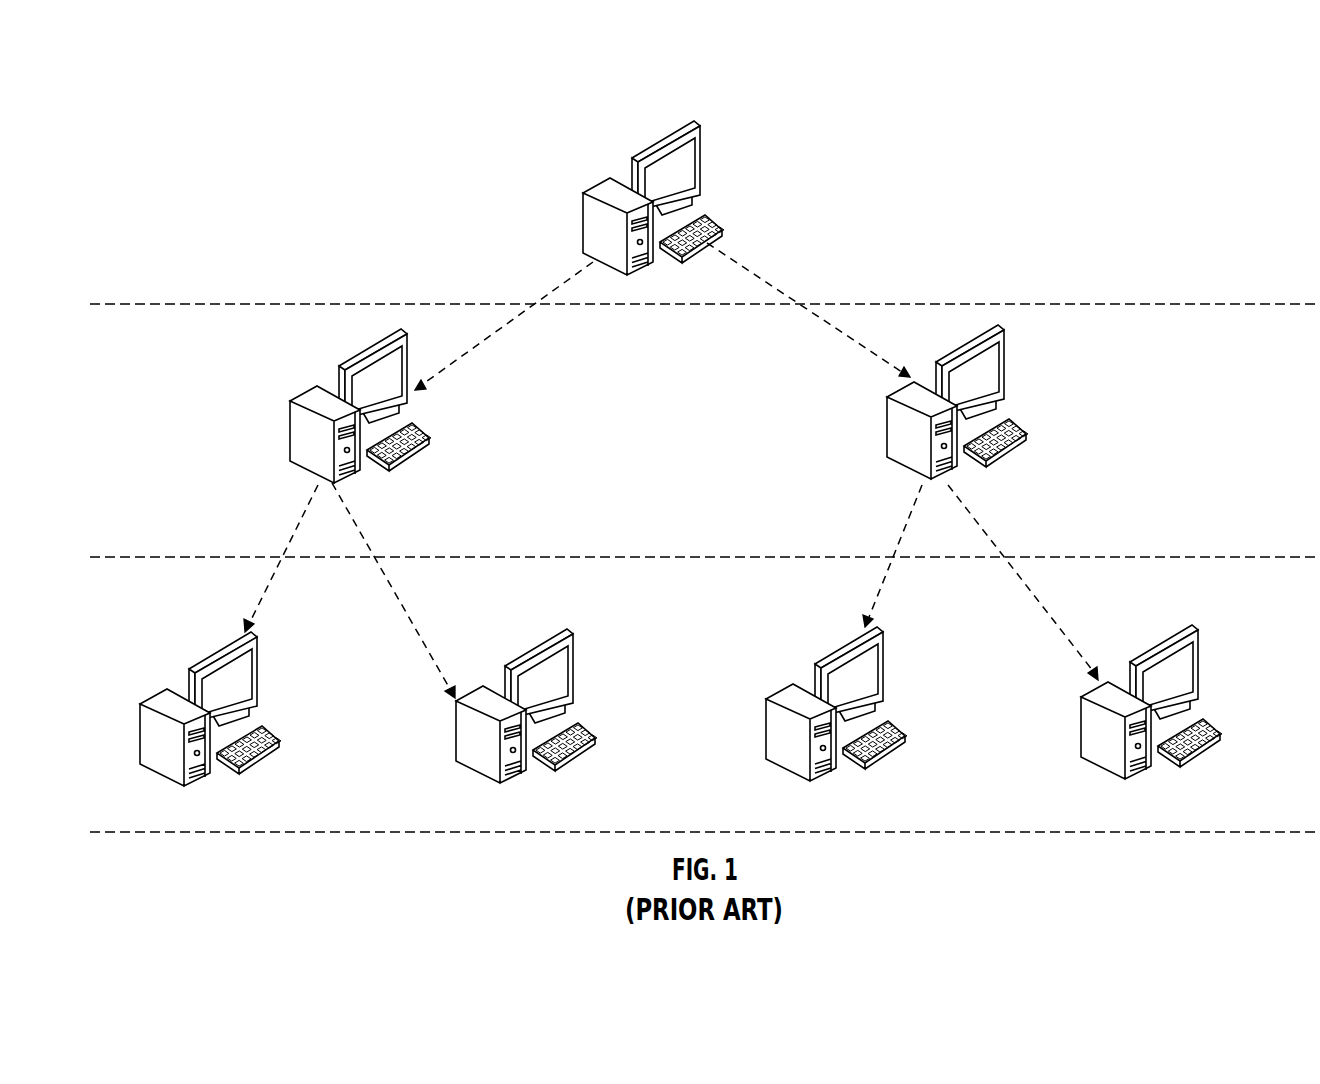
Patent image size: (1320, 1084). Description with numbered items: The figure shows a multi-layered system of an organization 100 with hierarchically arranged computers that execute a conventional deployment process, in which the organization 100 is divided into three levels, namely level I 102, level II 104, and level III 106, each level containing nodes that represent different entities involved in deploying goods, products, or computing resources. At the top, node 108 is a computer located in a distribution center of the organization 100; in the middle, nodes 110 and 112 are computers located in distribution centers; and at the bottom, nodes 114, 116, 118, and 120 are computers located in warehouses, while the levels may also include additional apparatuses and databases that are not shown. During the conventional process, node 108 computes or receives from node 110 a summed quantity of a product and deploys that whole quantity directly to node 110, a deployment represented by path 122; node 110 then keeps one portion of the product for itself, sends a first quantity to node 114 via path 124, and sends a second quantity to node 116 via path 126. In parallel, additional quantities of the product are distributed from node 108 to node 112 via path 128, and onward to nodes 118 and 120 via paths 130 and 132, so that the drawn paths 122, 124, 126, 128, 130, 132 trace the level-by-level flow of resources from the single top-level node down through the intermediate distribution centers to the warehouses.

The organization 100 is at (1100, 123).
The level I 102 is at (132, 273).
The level II 104 is at (132, 457).
The level III 106 is at (132, 640).
The node 108 is at (687, 123).
The node 110 is at (415, 365).
The node 112 is at (1010, 362).
The node 114 is at (263, 655).
The node 116 is at (577, 652).
The node 118 is at (888, 648).
The node 120 is at (1203, 647).
The path 122 is at (493, 333).
The path 124 is at (268, 582).
The path 126 is at (383, 578).
The path 128 is at (838, 330).
The path 130 is at (893, 575).
The path 132 is at (1020, 575).